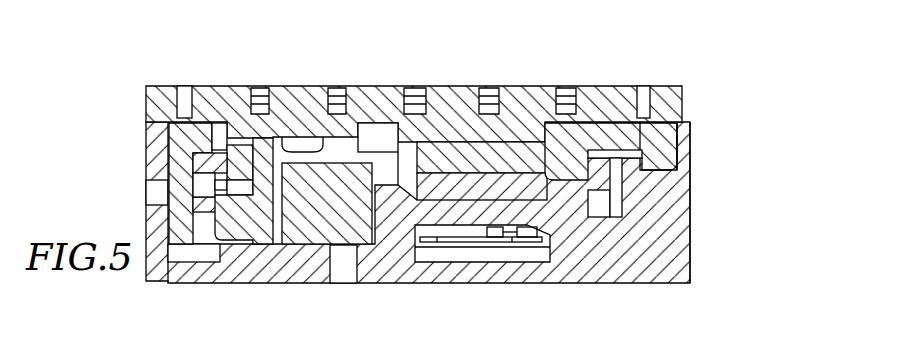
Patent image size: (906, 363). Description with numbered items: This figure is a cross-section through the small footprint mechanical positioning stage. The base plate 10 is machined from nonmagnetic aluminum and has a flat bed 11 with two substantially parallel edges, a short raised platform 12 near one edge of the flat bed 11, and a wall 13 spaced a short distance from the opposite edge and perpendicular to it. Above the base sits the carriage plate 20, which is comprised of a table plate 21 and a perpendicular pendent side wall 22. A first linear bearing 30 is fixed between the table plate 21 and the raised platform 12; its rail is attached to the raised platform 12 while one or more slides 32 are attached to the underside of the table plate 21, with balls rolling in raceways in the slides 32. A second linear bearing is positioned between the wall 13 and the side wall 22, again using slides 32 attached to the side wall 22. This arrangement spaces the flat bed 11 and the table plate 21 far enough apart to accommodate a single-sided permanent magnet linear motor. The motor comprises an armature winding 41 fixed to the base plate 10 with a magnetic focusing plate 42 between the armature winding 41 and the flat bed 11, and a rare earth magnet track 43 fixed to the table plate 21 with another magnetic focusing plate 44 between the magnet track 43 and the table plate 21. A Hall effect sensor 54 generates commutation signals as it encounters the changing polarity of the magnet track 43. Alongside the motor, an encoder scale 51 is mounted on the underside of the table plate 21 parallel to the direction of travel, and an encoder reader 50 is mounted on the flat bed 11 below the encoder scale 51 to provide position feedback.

The base plate 10 is at (703, 264).
The flat bed 11 is at (390, 268).
The raised platform 12 is at (686, 197).
The wall 13 is at (233, 229).
The carriage plate 20 is at (696, 99).
The table plate 21 is at (452, 100).
The side wall 22 is at (152, 119).
The first linear bearing 30 is at (692, 147).
The slides 32 is at (183, 139).
The armature winding 41 is at (567, 208).
The magnetic focusing plate 42 is at (474, 267).
The rare earth magnet track 43 is at (567, 193).
The magnetic focusing plate 44 is at (561, 135).
The encoder reader 50 is at (348, 199).
The encoder scale 51 is at (301, 141).
The Hall effect sensor 54 is at (556, 256).